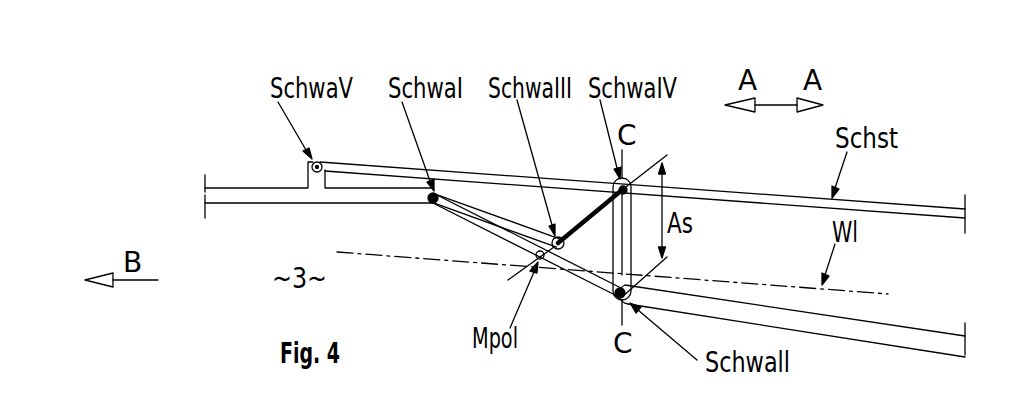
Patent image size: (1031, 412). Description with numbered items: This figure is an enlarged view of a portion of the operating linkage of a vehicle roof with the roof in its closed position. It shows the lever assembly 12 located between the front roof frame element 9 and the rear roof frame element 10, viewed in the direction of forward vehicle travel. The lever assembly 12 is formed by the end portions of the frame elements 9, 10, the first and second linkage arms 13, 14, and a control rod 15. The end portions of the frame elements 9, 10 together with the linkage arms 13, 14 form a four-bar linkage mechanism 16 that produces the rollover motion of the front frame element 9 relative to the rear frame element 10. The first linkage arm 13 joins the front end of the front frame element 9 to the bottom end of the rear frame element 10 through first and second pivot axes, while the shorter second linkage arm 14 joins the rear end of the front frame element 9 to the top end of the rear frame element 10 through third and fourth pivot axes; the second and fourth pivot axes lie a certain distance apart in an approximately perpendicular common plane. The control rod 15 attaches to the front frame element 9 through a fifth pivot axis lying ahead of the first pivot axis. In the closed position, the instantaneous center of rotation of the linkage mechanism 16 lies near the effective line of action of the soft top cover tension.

The front roof frame element 9 is at (246, 174).
The rear roof frame element 10 is at (926, 320).
The lever assembly 12 is at (547, 281).
The first linkage arm 13 is at (482, 242).
The second linkage arm 14 is at (583, 208).
The control rod 15 is at (925, 195).
The four-bar linkage mechanism 16 is at (589, 235).